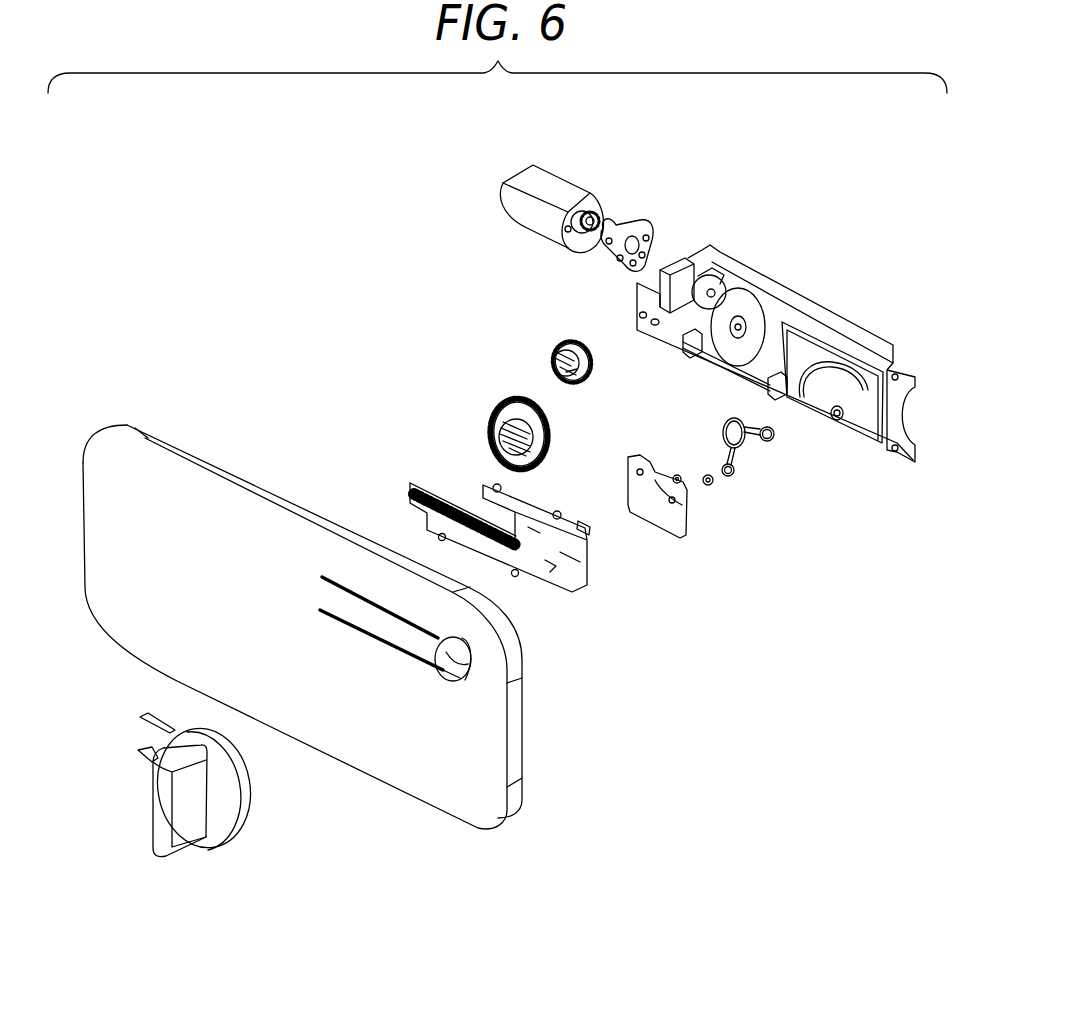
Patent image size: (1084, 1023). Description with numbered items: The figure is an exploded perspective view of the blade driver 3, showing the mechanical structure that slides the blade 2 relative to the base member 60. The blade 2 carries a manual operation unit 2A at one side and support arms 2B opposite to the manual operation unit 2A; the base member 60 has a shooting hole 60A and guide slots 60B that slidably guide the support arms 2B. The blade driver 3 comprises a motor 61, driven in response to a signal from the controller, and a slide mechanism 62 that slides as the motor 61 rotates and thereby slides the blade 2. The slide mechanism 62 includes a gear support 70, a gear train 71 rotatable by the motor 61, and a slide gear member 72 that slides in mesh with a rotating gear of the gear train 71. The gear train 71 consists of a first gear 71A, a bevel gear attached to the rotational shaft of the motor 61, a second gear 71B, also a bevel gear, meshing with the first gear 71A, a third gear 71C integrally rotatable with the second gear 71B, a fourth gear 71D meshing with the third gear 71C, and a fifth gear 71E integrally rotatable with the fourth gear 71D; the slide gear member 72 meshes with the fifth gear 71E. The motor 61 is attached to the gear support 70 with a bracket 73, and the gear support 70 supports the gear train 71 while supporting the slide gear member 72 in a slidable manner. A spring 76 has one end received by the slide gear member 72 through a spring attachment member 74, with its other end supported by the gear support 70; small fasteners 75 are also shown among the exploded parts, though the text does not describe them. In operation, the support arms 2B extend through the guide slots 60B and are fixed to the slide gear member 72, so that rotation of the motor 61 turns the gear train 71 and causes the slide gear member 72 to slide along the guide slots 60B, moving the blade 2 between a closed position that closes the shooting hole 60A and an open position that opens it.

The blade driver 3 is at (309, 189).
The blade 2 is at (248, 820).
The manual operation unit 2A is at (156, 823).
The support arms 2B is at (140, 717).
The base member 60 is at (438, 806).
The shooting hole 60A is at (463, 677).
The guide slots 60B is at (337, 575).
The motor 61 is at (557, 185).
The slide mechanism 62 is at (935, 456).
The gear support 70 is at (790, 292).
The gear train 71 is at (556, 315).
The first gear 71A is at (603, 222).
The second gear 71B is at (568, 338).
The third gear 71C is at (553, 360).
The fourth gear 71D is at (548, 425).
The fifth gear 71E is at (493, 423).
The slide gear member 72 is at (545, 577).
The bracket 73 is at (652, 232).
The spring attachment member 74 is at (657, 518).
The screw 75 is at (679, 483).
The spring 76 is at (747, 448).